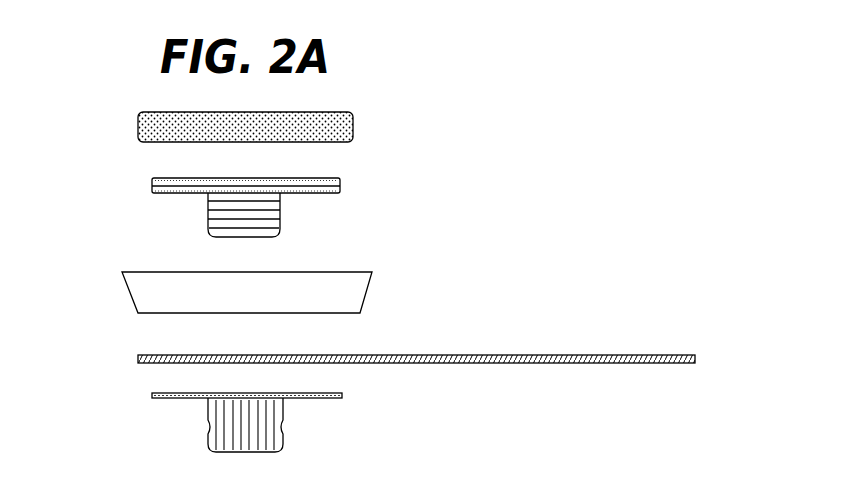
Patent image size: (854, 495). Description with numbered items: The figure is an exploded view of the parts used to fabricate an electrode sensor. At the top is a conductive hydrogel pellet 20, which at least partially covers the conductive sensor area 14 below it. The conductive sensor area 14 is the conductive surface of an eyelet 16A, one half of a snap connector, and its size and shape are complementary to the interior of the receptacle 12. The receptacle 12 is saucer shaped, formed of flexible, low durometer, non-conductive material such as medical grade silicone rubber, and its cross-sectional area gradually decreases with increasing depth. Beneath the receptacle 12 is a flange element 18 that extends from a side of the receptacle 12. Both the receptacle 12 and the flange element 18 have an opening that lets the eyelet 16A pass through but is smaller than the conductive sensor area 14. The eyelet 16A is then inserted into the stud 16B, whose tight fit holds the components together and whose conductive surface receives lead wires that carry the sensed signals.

The conductive hydrogel pellet 20 is at (137, 127).
The conductive sensor area 14 is at (320, 178).
The eyelet 16A is at (152, 187).
The receptacle 12 is at (143, 292).
The flange element 18 is at (515, 355).
The stud 16B is at (152, 395).